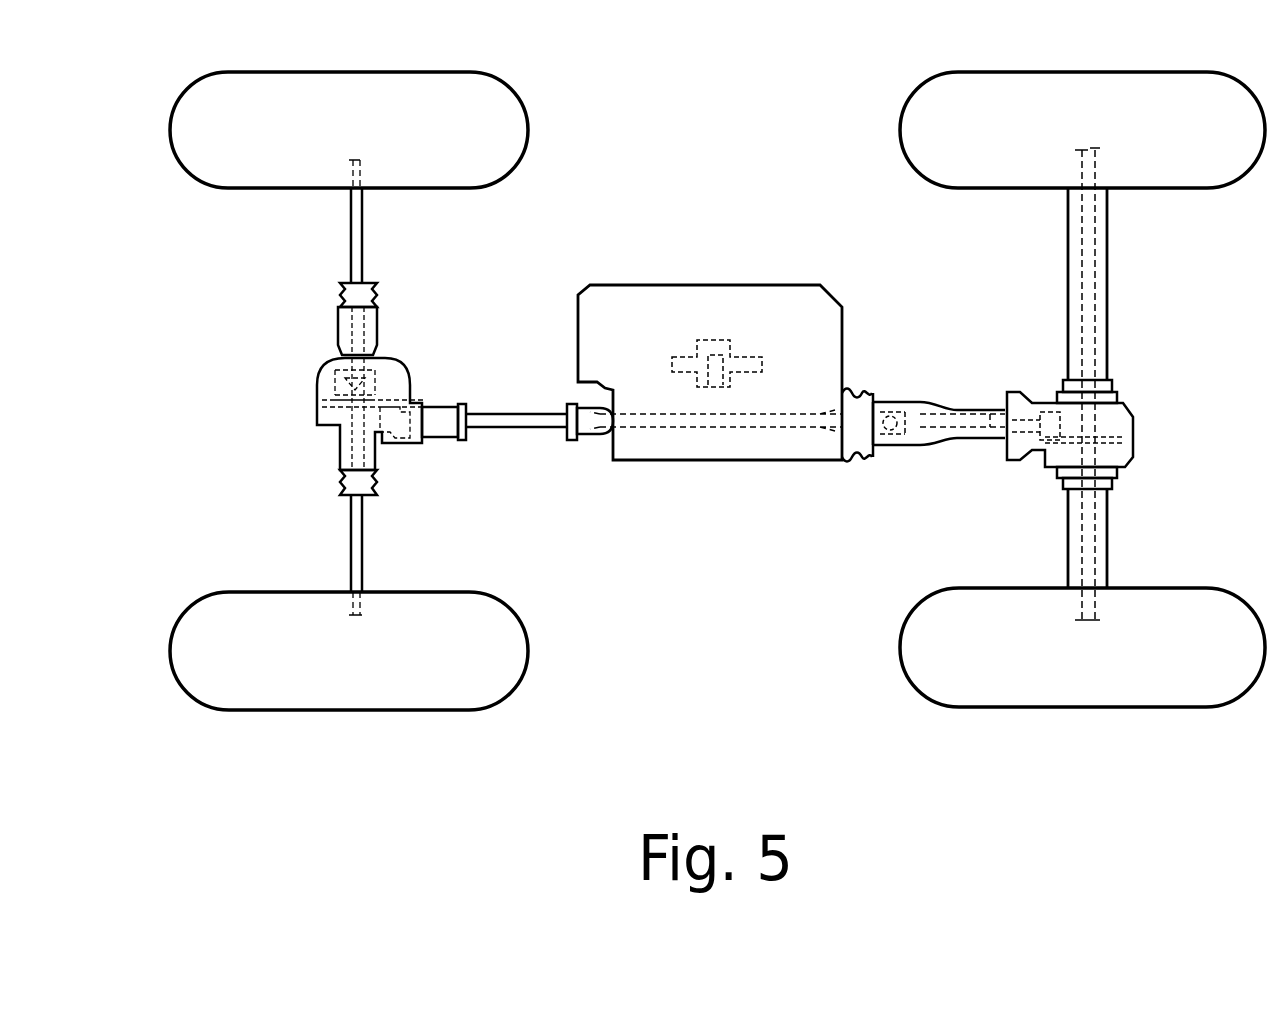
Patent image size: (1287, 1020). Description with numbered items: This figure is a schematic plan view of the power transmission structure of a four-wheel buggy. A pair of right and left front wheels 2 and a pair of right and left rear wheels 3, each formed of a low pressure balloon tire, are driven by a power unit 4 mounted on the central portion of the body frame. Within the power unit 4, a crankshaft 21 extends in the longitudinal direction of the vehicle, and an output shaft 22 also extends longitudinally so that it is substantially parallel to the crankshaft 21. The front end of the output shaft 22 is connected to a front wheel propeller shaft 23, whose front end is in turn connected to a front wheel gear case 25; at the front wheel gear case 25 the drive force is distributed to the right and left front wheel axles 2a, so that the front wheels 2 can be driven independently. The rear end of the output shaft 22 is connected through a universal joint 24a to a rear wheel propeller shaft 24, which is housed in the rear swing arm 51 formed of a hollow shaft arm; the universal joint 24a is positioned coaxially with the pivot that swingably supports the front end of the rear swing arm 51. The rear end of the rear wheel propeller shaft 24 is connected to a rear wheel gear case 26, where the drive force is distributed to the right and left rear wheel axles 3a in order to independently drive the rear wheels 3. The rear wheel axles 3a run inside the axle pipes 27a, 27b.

The front wheels 2 is at (440, 168).
The front wheel axles 2a is at (351, 228).
The rear wheels 3 is at (912, 128).
The rear wheel axles 3a is at (1093, 304).
The power unit 4 is at (805, 305).
The crankshaft 21 is at (690, 358).
The output shaft 22 is at (700, 427).
The front wheel propeller shaft 23 is at (512, 407).
The rear wheel propeller shaft 24 is at (948, 407).
The universal joint 24a is at (895, 443).
The front wheel gear case 25 is at (318, 400).
The rear wheel gear case 26 is at (1128, 417).
The axle pipe 27a is at (1107, 520).
The axle pipe 27b is at (1108, 232).
The rear swing arm 51 is at (962, 440).